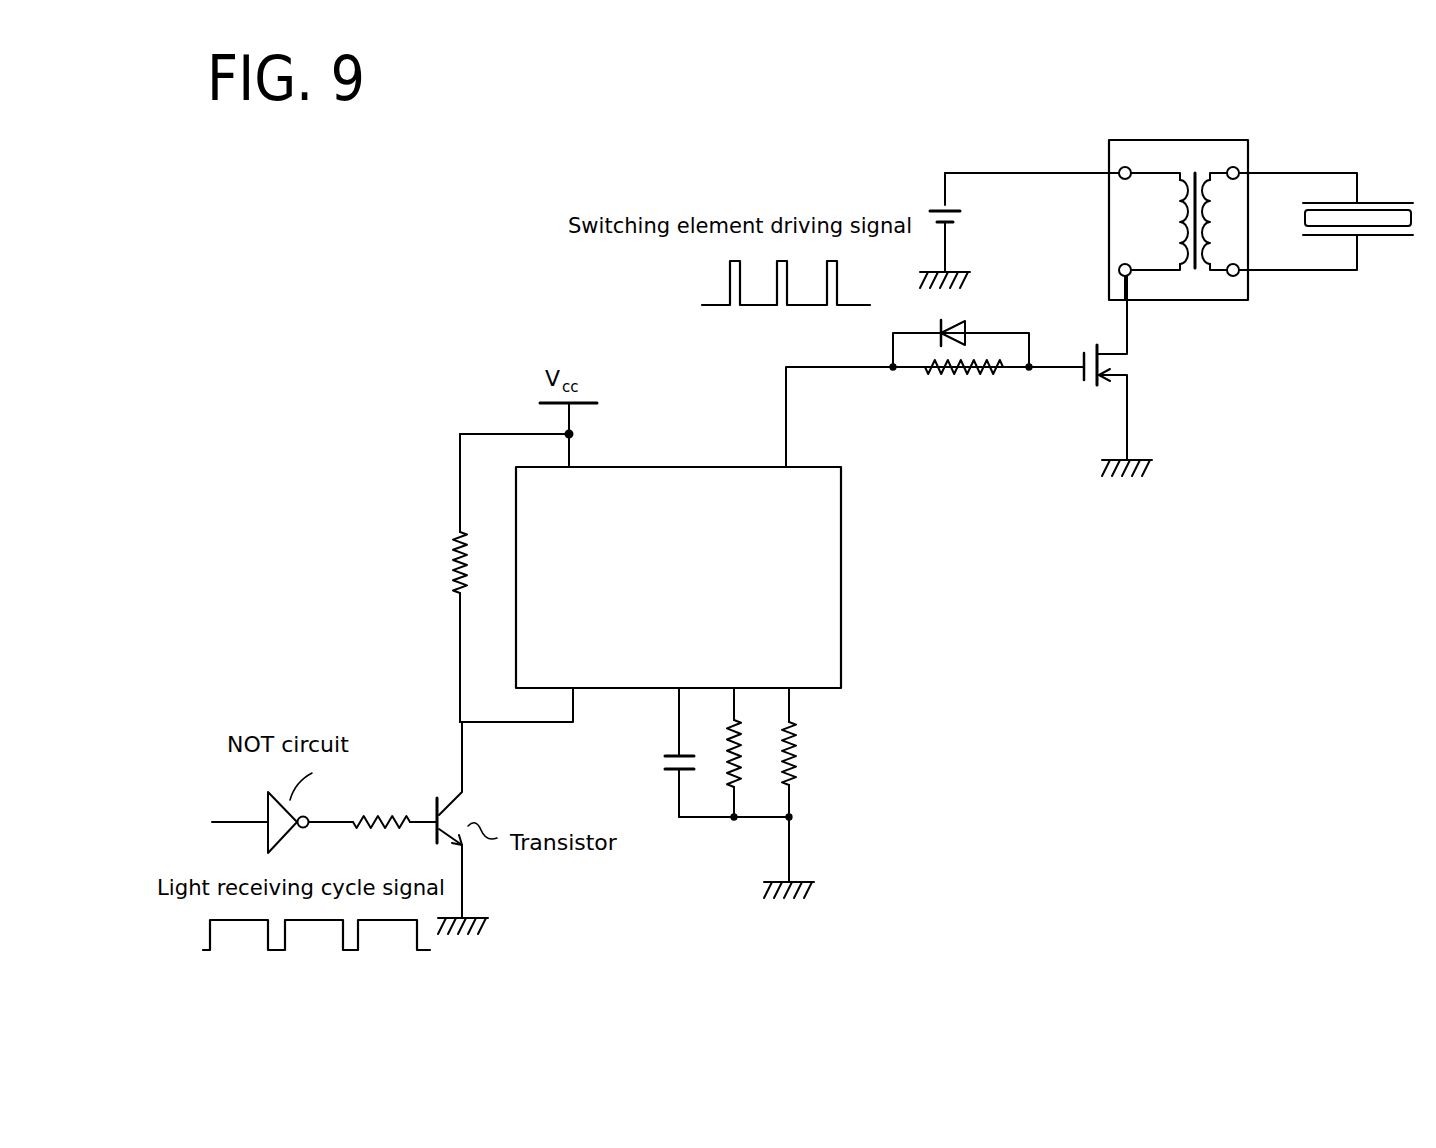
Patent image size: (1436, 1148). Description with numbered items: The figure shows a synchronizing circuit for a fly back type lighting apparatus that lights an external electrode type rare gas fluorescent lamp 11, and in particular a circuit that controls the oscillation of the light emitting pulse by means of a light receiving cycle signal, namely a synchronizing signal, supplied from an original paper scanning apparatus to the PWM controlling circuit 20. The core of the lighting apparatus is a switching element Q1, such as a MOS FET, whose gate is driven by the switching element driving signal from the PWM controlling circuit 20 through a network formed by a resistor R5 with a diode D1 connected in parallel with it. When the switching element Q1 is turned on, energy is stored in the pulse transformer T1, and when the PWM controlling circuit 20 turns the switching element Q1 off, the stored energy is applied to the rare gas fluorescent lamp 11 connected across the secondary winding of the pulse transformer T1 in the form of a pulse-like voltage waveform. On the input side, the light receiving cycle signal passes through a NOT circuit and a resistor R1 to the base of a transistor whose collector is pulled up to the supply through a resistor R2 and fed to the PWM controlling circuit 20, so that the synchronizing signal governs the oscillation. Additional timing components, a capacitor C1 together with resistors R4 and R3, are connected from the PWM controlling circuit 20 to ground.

The pulse transformer T1 is at (1193, 137).
The external electrode type rare gas fluorescent lamp 11 is at (1392, 243).
The diode D1 is at (968, 323).
The resistor R5 is at (960, 380).
The switching element Q1 is at (1088, 397).
The PWM controlling circuit 20 is at (846, 584).
The resistor R2 is at (456, 577).
The resistor R1 is at (399, 810).
The capacitor C1 is at (661, 747).
The resistor R4 is at (722, 741).
The resistor R3 is at (803, 754).